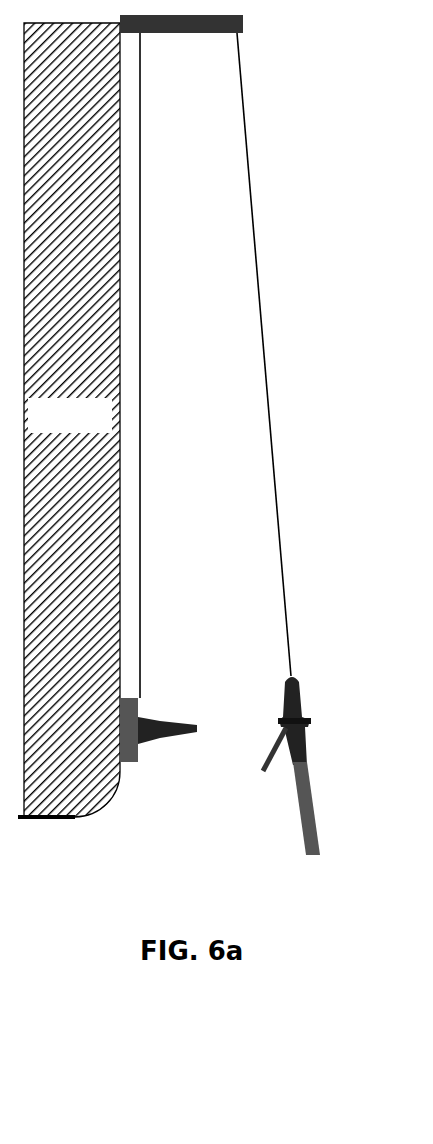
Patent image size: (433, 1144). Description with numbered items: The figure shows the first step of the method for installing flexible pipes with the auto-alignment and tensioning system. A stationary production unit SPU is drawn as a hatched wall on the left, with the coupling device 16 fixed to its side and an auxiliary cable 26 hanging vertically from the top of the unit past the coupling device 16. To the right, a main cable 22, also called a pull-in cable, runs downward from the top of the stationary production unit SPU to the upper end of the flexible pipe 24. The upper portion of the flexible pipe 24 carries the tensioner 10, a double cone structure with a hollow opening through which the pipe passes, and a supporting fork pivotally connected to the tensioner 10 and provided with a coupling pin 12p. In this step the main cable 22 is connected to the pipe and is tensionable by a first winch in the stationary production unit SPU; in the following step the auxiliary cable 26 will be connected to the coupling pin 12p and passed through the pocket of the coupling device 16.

The tensioner 10 is at (320, 719).
The coupling pin 12p is at (256, 773).
The coupling device 16 is at (180, 750).
The main cable 22 is at (279, 399).
The flexible pipe 24 is at (296, 844).
The auxiliary cable 26 is at (146, 421).
The stationary production unit SPU is at (69, 420).